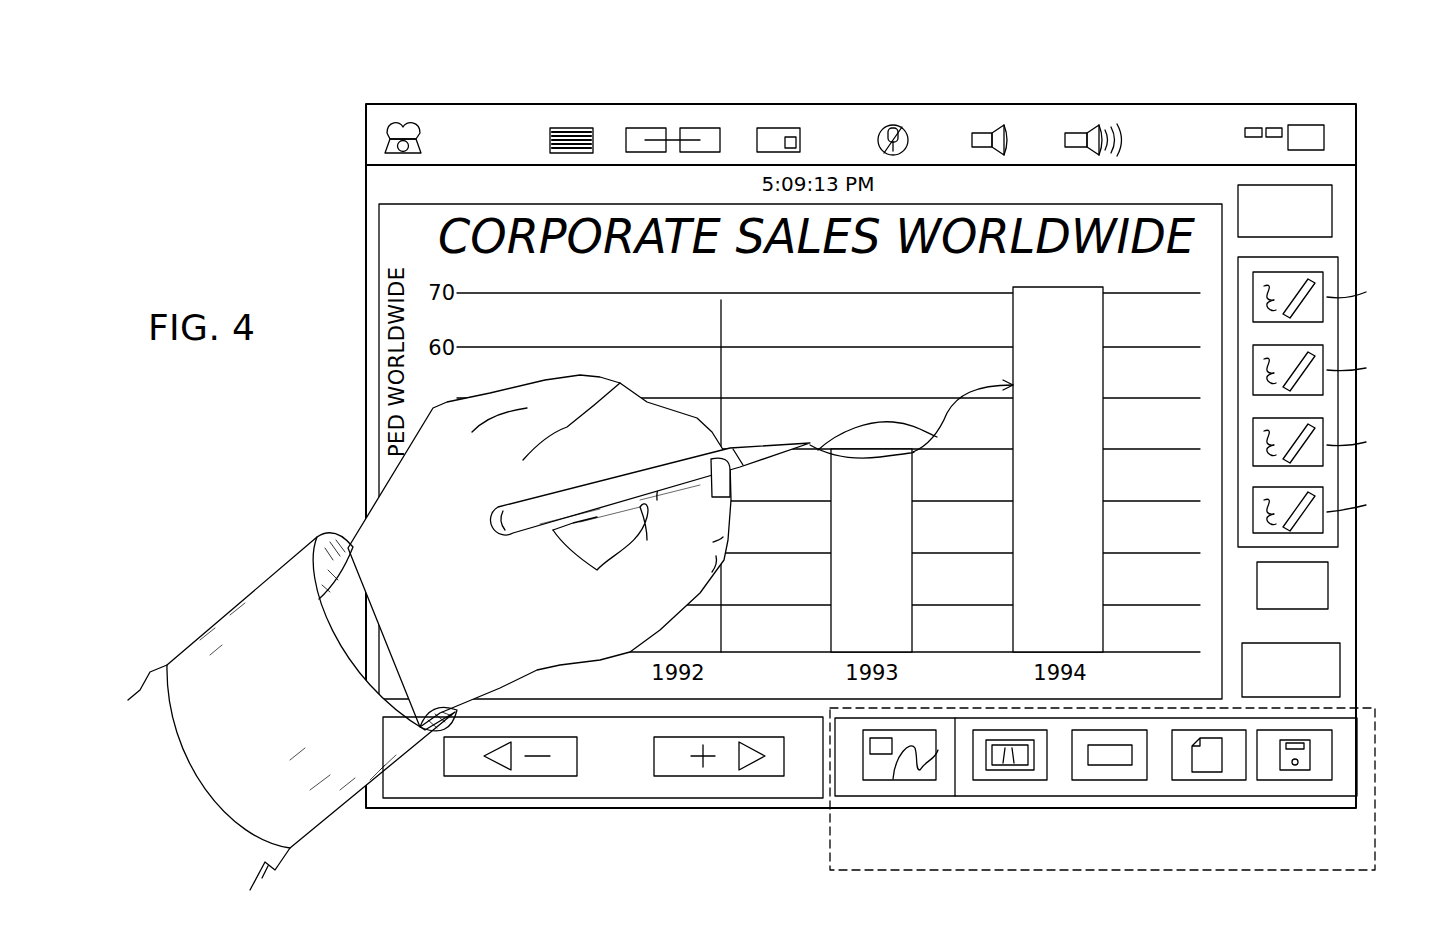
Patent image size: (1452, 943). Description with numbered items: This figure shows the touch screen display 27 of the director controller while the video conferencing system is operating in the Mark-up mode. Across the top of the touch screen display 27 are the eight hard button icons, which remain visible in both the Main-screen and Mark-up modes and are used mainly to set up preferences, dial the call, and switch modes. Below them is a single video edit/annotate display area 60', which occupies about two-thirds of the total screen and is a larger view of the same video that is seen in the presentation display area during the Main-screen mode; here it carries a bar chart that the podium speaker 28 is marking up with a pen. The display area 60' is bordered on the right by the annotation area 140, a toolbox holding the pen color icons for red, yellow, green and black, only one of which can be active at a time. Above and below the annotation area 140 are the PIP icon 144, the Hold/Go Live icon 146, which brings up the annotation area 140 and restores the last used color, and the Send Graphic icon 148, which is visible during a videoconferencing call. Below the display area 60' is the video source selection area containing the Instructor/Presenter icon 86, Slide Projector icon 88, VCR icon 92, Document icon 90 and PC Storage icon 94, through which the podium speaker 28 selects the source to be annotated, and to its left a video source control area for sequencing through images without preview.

The touch screen display 27 is at (500, 103).
The podium speaker 28 is at (240, 598).
The video edit/annotate display area 60' is at (831, 456).
The Instructor/Presenter icon 86 is at (900, 780).
The Slide Projector icon 88 is at (1010, 780).
The Document icon 90 is at (1205, 780).
The VCR icon 92 is at (1112, 780).
The PC Storage icon 94 is at (1290, 780).
The annotation area 140 is at (1290, 419).
The PIP icon 144 is at (1237, 197).
The Hold/Go Live icon 146 is at (1257, 590).
The Send Graphic icon 148 is at (1242, 650).